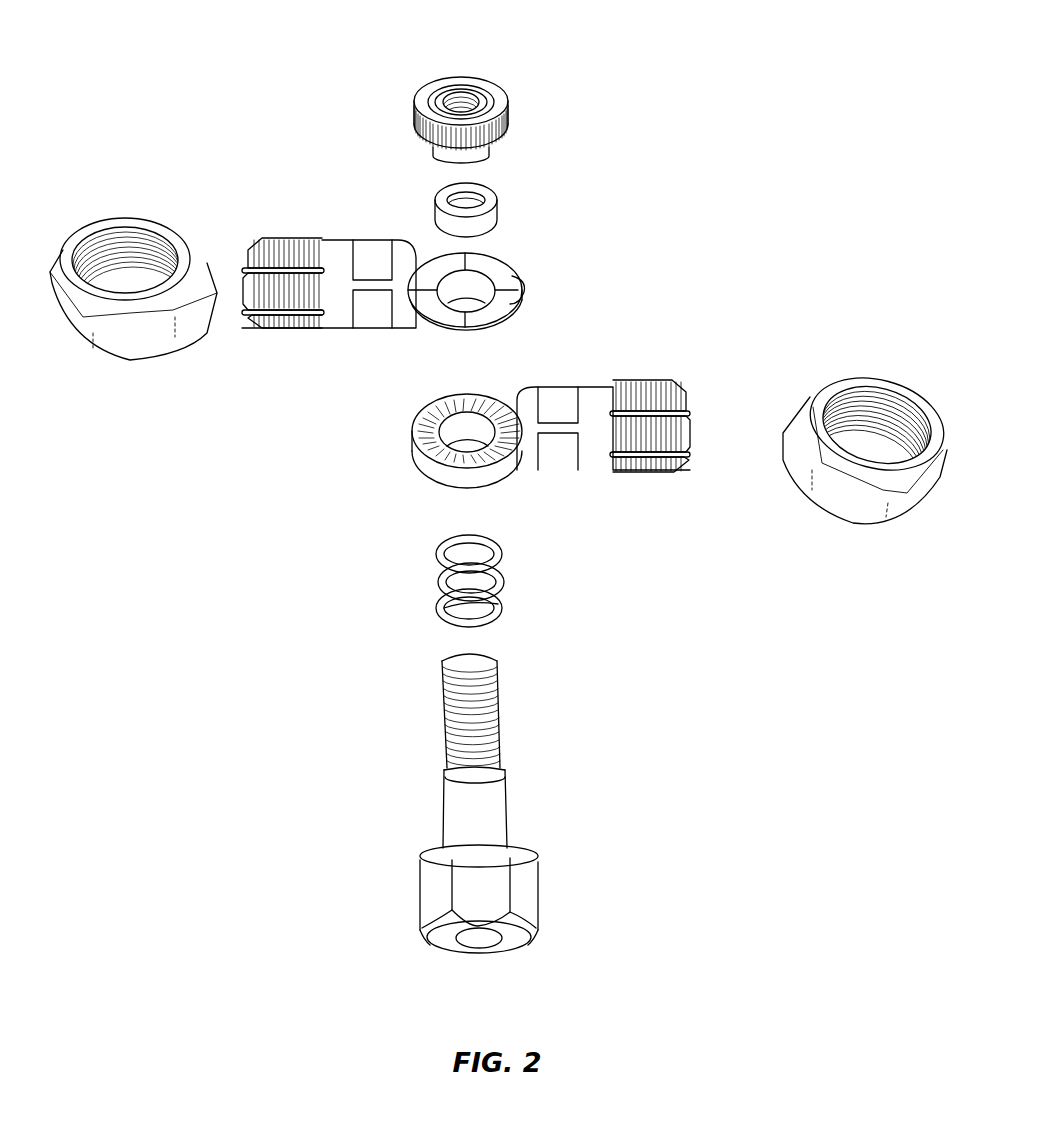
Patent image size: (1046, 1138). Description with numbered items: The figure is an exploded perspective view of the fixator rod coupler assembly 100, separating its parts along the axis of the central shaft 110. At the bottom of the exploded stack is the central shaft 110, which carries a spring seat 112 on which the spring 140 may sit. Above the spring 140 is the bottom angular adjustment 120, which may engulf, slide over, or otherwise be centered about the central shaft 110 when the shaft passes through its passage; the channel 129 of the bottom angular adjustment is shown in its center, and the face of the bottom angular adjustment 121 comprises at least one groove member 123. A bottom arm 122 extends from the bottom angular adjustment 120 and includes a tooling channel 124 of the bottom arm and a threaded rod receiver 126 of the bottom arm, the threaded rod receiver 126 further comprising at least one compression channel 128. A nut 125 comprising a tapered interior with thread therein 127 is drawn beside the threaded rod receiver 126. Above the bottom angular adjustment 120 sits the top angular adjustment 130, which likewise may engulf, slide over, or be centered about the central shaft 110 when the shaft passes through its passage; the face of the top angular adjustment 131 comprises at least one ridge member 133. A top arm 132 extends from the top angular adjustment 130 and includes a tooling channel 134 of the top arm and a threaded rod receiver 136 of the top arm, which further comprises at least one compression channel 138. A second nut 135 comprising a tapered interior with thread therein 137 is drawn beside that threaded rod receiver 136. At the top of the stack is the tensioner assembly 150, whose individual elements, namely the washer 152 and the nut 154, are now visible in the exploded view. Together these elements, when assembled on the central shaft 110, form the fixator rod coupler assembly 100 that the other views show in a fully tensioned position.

The fixator rod coupler assembly 100 is at (640, 257).
The central shaft 110 is at (463, 803).
The spring seat 112 is at (460, 817).
The bottom angular adjustment 120 is at (566, 456).
The face of the bottom angular adjustment 121 is at (483, 404).
The bottom arm 122 is at (597, 403).
The groove member 123 is at (458, 452).
The tooling channel of the bottom arm 124 is at (563, 455).
The nut 125 is at (868, 454).
The threaded rod receiver of the bottom arm 126 is at (690, 432).
The tapered interior with thread therein 127 is at (878, 404).
The compression channel 128 is at (670, 412).
The channel of the bottom angular adjustment 129 is at (443, 430).
The top angular adjustment 130 is at (409, 294).
The face of the top angular adjustment 131 is at (440, 320).
The top arm 132 is at (338, 280).
The ridge member 133 is at (521, 289).
The tooling channel of the top arm 134 is at (372, 322).
The nut 135 is at (133, 291).
The threaded rod receiver of the top arm 136 is at (244, 258).
The tapered interior with thread therein 137 is at (125, 246).
The compression channel 138 is at (271, 270).
The spring 140 is at (503, 626).
The tensioner assembly 150 is at (395, 162).
The washer 152 is at (494, 198).
The nut 154 is at (486, 82).